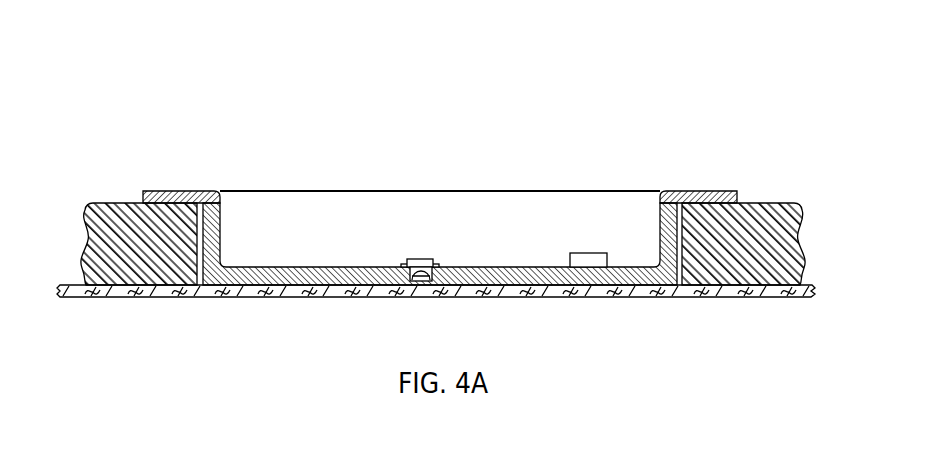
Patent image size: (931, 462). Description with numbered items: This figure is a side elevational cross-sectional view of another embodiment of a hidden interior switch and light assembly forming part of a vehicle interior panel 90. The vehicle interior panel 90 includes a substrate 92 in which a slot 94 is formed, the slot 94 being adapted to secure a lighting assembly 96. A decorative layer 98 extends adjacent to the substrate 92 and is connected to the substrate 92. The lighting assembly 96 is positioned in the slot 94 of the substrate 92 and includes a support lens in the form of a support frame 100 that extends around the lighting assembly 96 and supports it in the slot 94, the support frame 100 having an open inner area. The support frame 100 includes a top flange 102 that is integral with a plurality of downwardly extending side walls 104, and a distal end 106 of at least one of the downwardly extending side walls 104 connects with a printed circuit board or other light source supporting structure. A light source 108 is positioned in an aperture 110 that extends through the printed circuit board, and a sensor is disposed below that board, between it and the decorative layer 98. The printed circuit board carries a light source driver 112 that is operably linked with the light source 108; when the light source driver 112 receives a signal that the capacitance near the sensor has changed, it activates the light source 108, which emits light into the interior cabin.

The vehicle interior panel 90 is at (112, 168).
The substrate 92 is at (768, 203).
The slot 94 is at (224, 245).
The lighting assembly 96 is at (343, 265).
The decorative layer 98 is at (805, 284).
The support frame 100 is at (218, 215).
The top flange 102 is at (173, 190).
The downwardly extending side walls 104 is at (197, 235).
The distal end 106 is at (203, 255).
The light source 108 is at (423, 284).
The aperture 110 is at (415, 280).
The light source driver 112 is at (580, 253).